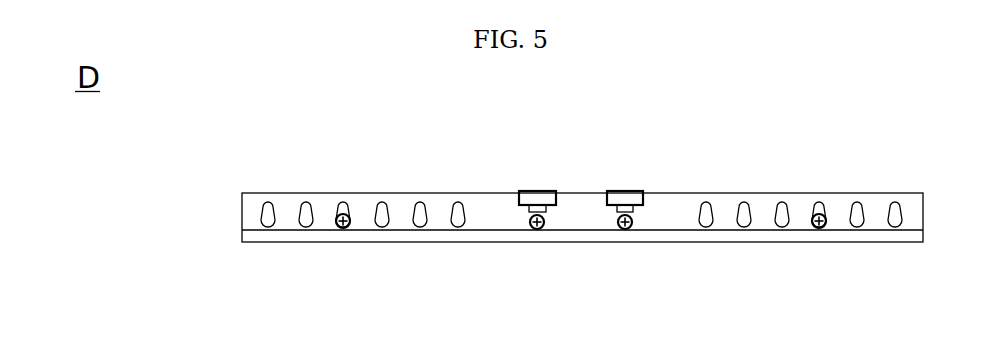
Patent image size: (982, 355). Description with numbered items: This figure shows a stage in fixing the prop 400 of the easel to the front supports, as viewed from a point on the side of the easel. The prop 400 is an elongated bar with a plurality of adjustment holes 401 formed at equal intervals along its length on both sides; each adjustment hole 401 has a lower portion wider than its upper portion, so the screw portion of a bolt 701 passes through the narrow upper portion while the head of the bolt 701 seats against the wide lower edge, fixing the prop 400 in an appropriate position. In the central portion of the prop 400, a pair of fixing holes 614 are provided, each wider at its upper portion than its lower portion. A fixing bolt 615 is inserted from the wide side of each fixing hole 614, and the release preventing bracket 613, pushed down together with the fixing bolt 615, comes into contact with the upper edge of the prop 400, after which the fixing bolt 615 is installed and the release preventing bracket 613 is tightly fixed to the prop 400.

The prop 400 is at (245, 212).
The adjustment holes 401 is at (343, 202).
The release preventing bracket 613 is at (550, 191).
The fixing hole 614 is at (636, 211).
The fixing bolt 615 is at (545, 228).
The bolt 701 is at (343, 228).